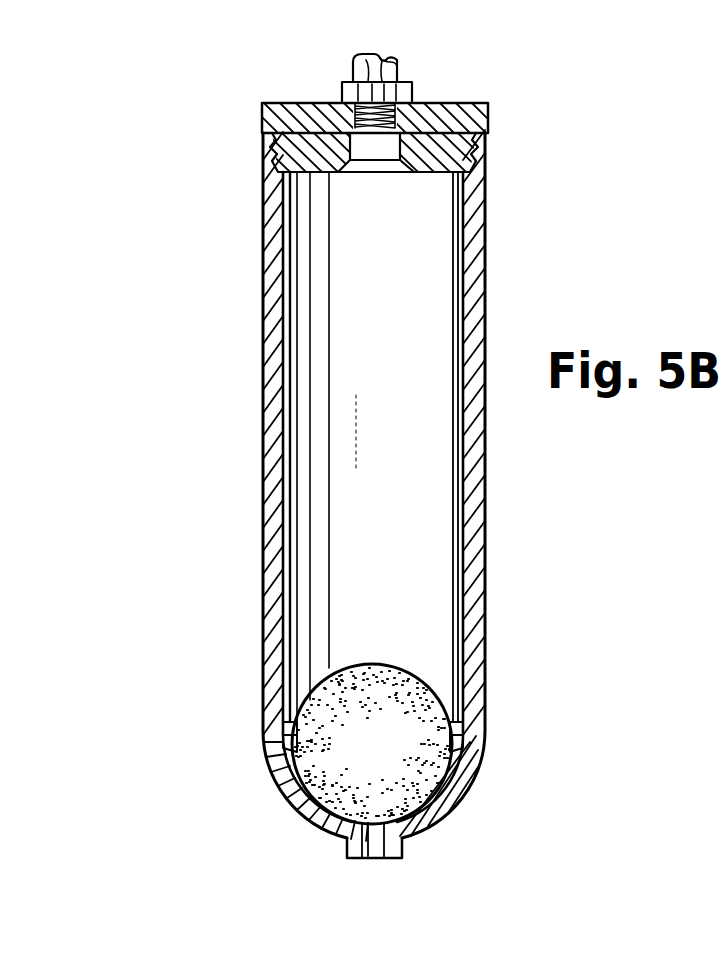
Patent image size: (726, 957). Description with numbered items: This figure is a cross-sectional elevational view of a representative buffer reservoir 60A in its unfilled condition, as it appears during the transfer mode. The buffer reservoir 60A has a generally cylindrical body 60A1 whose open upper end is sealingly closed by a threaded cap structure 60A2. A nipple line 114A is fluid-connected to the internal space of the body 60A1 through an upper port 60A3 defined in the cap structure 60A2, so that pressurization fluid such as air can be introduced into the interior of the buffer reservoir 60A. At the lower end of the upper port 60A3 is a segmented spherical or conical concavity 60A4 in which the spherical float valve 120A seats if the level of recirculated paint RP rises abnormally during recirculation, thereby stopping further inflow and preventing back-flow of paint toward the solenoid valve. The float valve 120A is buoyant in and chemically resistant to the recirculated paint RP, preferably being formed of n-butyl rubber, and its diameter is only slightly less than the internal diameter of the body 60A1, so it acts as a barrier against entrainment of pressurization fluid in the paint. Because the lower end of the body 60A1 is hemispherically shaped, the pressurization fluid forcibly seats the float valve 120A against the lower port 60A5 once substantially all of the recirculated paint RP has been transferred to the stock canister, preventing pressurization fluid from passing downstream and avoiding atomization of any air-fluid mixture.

The buffer reservoir 60A is at (226, 740).
The body 60A1 is at (273, 458).
The threaded cap structure 60A2 is at (478, 113).
The upper port 60A3 is at (487, 130).
The segmented spherical concavity 60A4 is at (380, 174).
The nipple line 114A is at (353, 76).
The recirculated paint RP is at (456, 730).
The spherical float valve 120A is at (412, 756).
The lower port 60A5 is at (377, 860).